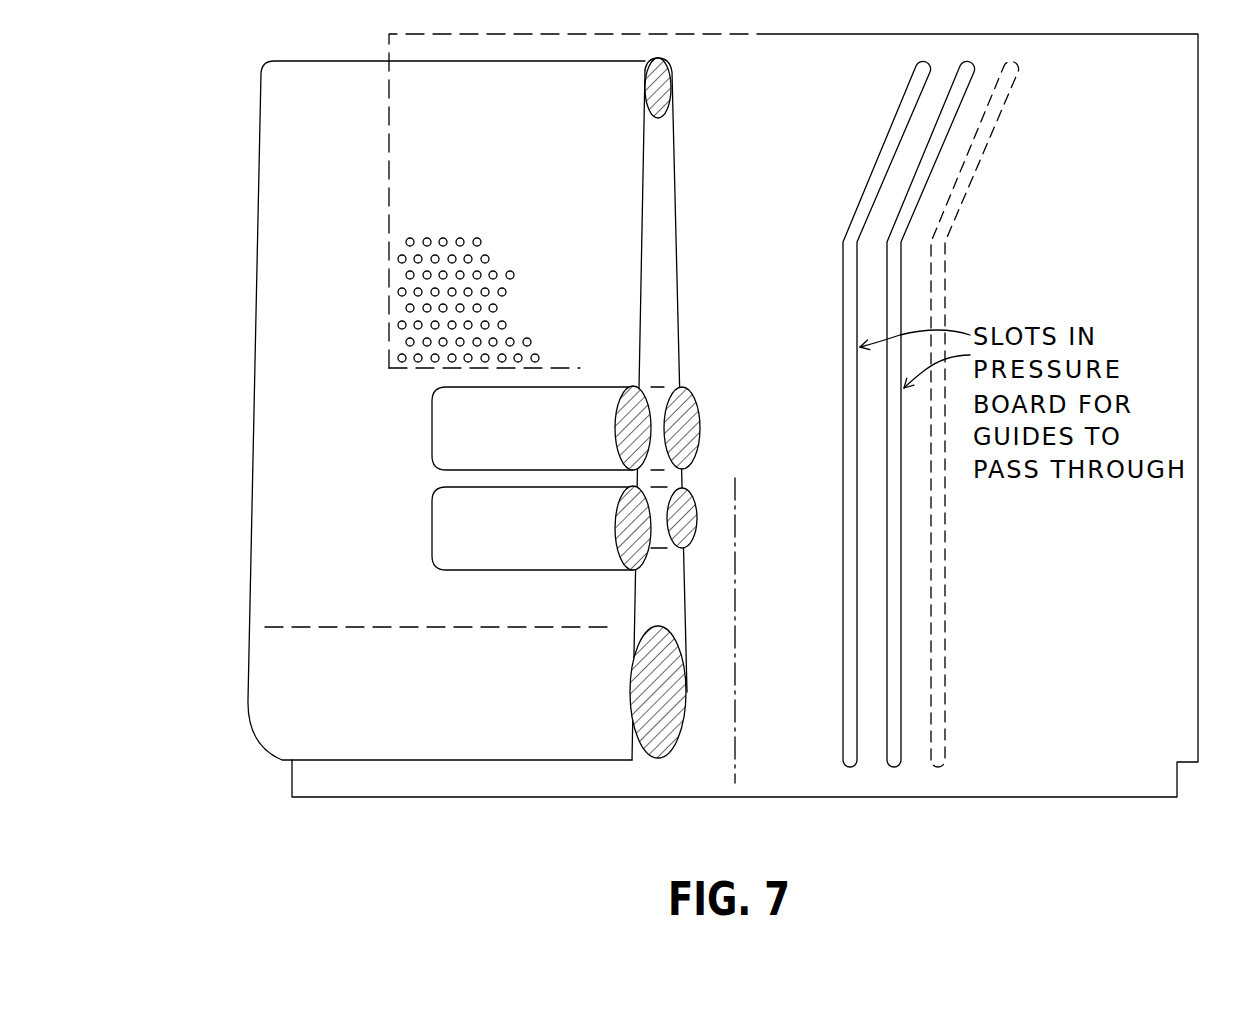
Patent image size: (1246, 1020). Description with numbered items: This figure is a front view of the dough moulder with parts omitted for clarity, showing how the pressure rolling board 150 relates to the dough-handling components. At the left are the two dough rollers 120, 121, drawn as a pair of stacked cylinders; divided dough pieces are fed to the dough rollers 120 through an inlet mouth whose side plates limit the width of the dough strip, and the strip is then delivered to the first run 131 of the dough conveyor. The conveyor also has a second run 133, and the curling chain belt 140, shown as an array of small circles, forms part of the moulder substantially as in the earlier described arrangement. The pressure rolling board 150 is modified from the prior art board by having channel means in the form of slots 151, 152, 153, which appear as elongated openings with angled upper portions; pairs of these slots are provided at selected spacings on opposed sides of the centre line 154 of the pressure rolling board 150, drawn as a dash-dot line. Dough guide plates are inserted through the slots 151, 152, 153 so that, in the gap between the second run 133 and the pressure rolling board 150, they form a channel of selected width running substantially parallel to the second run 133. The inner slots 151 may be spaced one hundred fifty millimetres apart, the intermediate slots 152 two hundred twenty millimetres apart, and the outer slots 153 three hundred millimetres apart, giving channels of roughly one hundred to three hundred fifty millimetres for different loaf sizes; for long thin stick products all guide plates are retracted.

The dough roller 120 is at (550, 447).
The dough roller 121 is at (550, 547).
The first run 131 is at (312, 446).
The second run 133 is at (680, 315).
The curling chain belt 140 is at (401, 286).
The pressure rolling board 150 is at (1008, 776).
The inner slot 151 is at (894, 119).
The intermediate slot 152 is at (909, 184).
The outer slot 153 is at (975, 178).
The centre line 154 is at (736, 622).